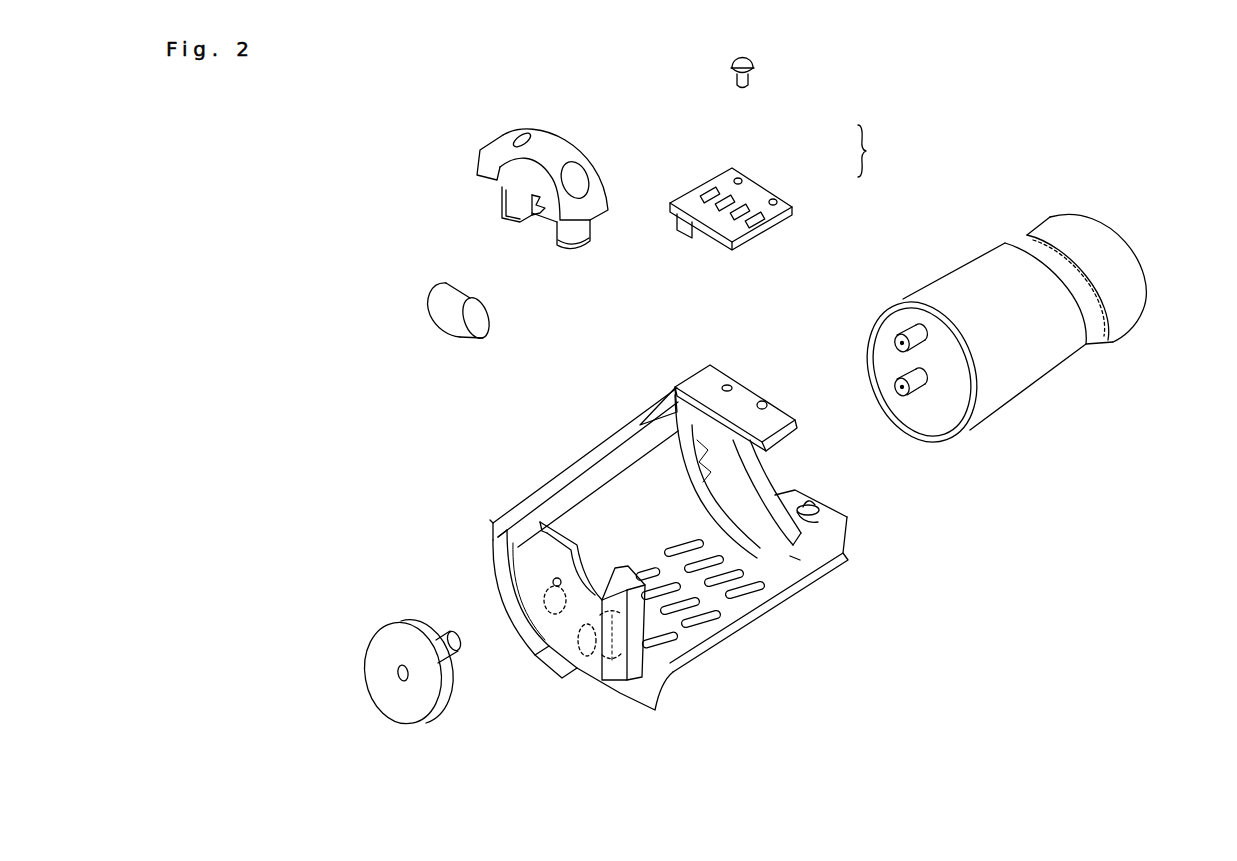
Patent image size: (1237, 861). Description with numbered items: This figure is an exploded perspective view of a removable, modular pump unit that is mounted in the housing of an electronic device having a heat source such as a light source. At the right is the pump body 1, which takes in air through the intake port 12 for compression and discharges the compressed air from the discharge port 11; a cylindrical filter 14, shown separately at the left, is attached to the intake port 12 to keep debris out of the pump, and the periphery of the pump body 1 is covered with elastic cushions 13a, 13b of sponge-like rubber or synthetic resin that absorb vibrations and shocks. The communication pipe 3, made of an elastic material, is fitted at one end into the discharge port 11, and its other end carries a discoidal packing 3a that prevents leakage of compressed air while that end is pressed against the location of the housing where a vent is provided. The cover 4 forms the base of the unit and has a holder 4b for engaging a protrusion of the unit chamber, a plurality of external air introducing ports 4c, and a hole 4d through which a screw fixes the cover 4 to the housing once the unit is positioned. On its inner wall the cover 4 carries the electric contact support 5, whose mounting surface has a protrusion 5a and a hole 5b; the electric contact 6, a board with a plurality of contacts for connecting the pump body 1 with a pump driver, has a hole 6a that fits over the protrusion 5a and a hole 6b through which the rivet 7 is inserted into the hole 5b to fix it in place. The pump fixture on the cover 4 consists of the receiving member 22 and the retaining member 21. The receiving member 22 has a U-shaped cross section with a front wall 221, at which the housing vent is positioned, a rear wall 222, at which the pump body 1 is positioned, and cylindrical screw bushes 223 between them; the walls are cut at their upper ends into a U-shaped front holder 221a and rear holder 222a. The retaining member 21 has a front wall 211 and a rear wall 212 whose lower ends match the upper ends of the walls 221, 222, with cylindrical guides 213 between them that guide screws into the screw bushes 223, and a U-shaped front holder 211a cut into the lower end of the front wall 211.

The pump body 1 is at (1028, 345).
The discharge port 11 is at (912, 392).
The intake port 12 is at (900, 335).
The cushion 13a is at (1034, 378).
The cushion 13b is at (1066, 222).
The cylindrical filter 14 is at (442, 288).
The communication pipe 3 is at (470, 725).
The discoidal packing 3a is at (368, 663).
The cover 4 is at (590, 537).
The holder 4b is at (800, 560).
The external air introducing port 4c is at (543, 653).
The hole 4d is at (812, 495).
The electric contact support 5 is at (771, 416).
The protrusion 5a is at (765, 401).
The hole 5b is at (727, 378).
The electric contact 6 is at (798, 175).
The hole 6a is at (740, 177).
The hole 6b is at (775, 198).
The rivet 7 is at (750, 63).
The retaining member 21 is at (588, 190).
The front wall 211 is at (522, 182).
The front holder 211a is at (530, 210).
The rear wall 212 is at (592, 143).
The cylindrical guide 213 is at (592, 230).
The receiving member 22 is at (544, 589).
The front wall 221 is at (515, 573).
The front holder 221a is at (574, 612).
The rear wall 222 is at (533, 533).
The rear holder 222a is at (594, 572).
The cylindrical screw bush 223 is at (543, 600).